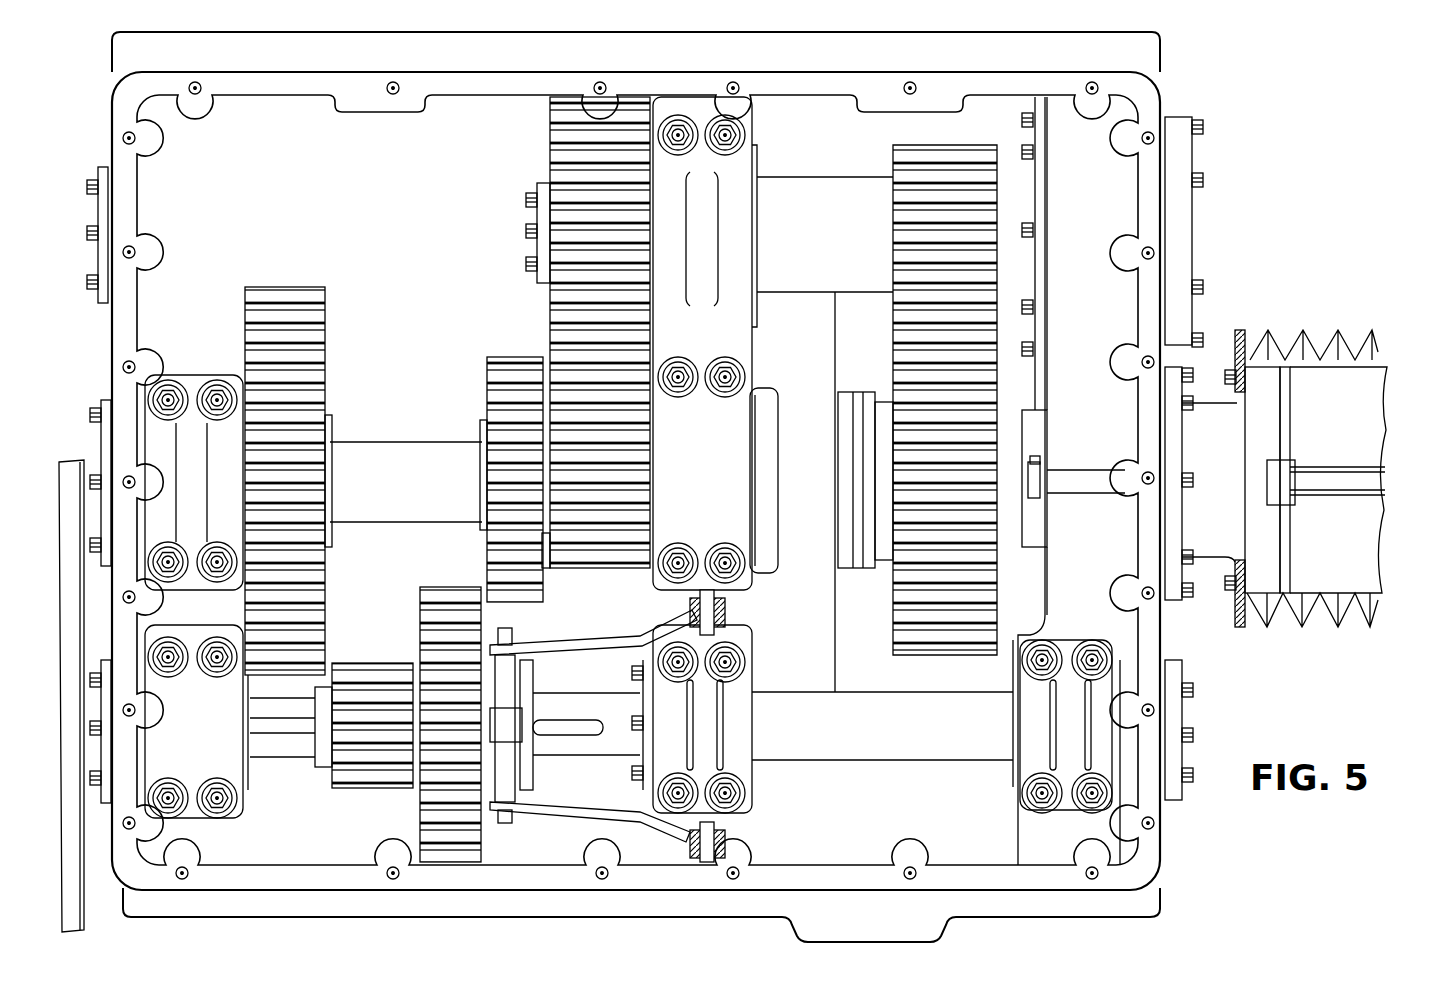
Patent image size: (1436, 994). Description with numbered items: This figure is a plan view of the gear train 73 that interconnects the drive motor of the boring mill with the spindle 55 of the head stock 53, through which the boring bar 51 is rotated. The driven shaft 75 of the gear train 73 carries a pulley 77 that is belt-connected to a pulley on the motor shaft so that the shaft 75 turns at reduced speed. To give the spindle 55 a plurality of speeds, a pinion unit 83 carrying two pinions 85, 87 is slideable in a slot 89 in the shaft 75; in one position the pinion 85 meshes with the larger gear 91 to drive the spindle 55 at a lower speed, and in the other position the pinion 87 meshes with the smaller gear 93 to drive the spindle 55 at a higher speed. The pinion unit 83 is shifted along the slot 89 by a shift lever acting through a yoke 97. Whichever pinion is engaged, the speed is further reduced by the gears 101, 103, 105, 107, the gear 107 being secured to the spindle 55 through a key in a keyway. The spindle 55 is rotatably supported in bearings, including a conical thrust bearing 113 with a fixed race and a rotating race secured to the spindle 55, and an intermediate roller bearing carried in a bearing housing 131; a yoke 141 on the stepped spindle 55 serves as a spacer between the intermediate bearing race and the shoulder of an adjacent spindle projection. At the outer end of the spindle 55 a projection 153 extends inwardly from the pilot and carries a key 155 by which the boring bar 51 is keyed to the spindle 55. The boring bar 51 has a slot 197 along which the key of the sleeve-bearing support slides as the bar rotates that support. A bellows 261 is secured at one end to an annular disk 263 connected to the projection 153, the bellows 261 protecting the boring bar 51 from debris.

The boring bar 51 is at (1372, 404).
The head stock 53 is at (779, 56).
The spindle 55 is at (1218, 566).
The gear train 73 is at (467, 303).
The driven shaft 75 is at (274, 748).
The pulley 77 is at (72, 472).
The pinion unit 83 is at (399, 627).
The pinion 85 is at (365, 663).
The pinion 87 is at (440, 592).
The slot 89 is at (562, 724).
The larger gear 91 is at (325, 368).
The smaller gear 93 is at (487, 388).
The yoke 97 is at (596, 640).
The gear 101 is at (596, 562).
The gear 103 is at (552, 130).
The gear 105 is at (960, 152).
The gear 107 is at (950, 648).
The thrust bearing 113 is at (873, 584).
The bearing housing 131 is at (1047, 382).
The yoke 141 is at (1033, 545).
The projection 153 is at (1270, 571).
The key 155 is at (1285, 503).
The slot 197 is at (1343, 476).
The bellows 261 is at (1318, 324).
The annular disk 263 is at (1237, 336).